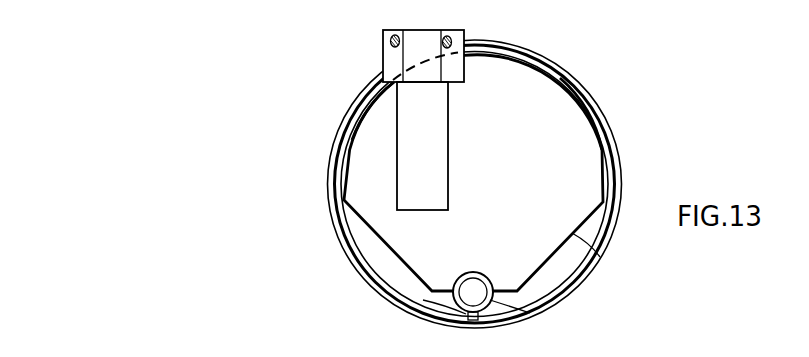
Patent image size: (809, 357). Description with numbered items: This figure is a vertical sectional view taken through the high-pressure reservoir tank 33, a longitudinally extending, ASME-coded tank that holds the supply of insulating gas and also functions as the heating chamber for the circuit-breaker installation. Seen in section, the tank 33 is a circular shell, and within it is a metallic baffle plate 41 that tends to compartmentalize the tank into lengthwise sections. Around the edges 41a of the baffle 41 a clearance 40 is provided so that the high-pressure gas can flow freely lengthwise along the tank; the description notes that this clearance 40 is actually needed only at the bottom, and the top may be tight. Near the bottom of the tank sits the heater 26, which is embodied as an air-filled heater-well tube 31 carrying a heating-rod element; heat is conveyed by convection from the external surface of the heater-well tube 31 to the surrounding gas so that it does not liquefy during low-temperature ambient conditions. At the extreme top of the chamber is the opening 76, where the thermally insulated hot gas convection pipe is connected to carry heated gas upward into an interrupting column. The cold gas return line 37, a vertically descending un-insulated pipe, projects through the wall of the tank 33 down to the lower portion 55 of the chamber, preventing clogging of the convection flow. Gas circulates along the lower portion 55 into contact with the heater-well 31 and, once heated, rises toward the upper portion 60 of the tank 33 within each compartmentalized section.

The heater 26 is at (478, 281).
The heater-well tube 31 is at (537, 315).
The high-pressure reservoir tank 33 is at (588, 92).
The cold gas return line 37 is at (448, 144).
The clearance 40 is at (333, 143).
The baffle plate 41 is at (598, 256).
The edges of the baffles 41a is at (358, 102).
The lower portion of the tank 55 is at (440, 302).
The upper portion of the tank 60 is at (533, 62).
The opening 76 is at (441, 38).